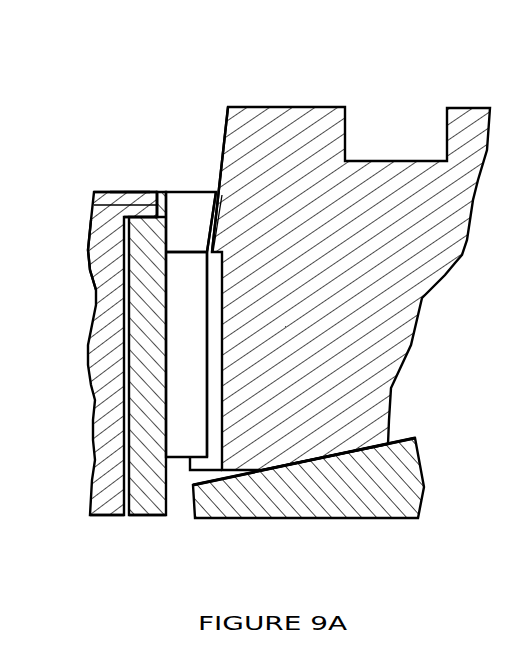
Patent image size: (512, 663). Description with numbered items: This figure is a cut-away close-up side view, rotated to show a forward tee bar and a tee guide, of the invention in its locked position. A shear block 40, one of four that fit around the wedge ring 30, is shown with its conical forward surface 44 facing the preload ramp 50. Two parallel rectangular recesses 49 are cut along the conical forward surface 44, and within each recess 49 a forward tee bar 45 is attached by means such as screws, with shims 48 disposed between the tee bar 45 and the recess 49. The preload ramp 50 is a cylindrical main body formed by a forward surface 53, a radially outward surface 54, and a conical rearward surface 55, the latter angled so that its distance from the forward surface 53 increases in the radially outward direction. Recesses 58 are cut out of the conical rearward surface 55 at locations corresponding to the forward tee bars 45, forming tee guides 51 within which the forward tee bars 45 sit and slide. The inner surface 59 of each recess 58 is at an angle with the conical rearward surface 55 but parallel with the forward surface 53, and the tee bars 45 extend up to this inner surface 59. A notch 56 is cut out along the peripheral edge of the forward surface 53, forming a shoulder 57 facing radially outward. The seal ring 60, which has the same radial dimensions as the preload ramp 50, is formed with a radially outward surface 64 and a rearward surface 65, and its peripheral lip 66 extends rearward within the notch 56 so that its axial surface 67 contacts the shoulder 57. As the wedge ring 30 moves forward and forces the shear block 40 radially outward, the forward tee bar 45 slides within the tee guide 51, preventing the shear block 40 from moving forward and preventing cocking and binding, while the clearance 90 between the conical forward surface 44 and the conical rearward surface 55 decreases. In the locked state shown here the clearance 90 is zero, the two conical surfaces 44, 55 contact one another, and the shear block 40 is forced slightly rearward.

The wedge ring 30 is at (426, 487).
The shear block 40 is at (313, 103).
The conical forward surface 44 is at (223, 127).
The forward tee bar 45 is at (176, 445).
The shims 48 is at (222, 340).
The rectangular recess 49 is at (217, 240).
The preload ramp 50 is at (148, 520).
The tee guide 51 is at (184, 236).
The forward surface 53 is at (127, 440).
The radially outward surface 54 is at (158, 191).
The conical rearward surface 55 is at (184, 468).
The notch 56 is at (118, 205).
The shoulder 57 is at (126, 217).
The recess 58 is at (198, 190).
The inner surface 59 is at (172, 193).
The seal ring 60 is at (108, 520).
The radially outward surface 64 is at (98, 191).
The rearward surface 65 is at (100, 394).
The peripheral lip 66 is at (133, 200).
The axial surface 67 is at (115, 258).
The clearance 90 is at (216, 170).